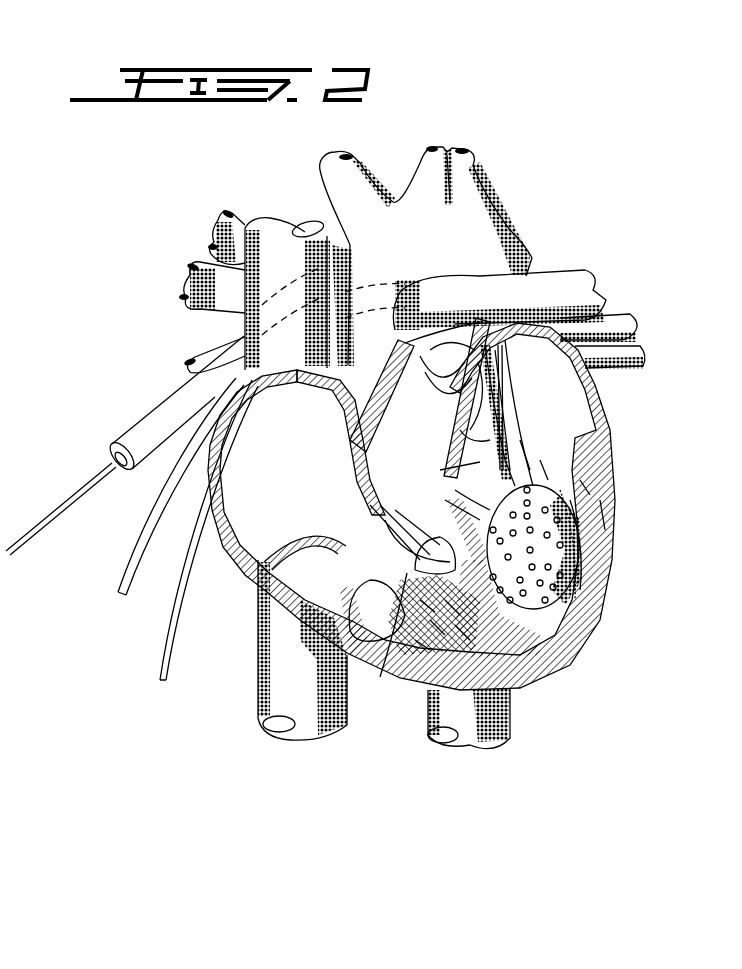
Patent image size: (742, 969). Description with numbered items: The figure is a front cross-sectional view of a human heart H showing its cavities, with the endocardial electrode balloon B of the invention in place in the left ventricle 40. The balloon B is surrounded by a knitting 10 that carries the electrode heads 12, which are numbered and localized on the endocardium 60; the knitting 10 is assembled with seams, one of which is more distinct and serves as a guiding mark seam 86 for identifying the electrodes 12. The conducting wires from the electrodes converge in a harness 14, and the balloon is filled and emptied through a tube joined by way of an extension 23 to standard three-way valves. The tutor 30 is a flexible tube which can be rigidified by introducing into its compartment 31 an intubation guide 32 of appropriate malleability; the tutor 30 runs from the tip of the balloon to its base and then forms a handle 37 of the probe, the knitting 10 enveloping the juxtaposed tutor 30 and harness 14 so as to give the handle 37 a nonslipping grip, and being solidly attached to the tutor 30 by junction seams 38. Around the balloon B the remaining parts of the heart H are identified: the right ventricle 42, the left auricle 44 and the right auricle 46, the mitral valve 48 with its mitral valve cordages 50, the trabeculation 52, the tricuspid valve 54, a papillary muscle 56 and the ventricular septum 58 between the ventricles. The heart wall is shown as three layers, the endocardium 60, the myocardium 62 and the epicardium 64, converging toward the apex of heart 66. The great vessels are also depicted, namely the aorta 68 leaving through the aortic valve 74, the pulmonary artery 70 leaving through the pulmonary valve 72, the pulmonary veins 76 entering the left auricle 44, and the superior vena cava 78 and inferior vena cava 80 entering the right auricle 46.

The knitting 10 is at (545, 540).
The electrode heads 12 is at (604, 583).
The harness 14 is at (160, 627).
The extension 23 is at (123, 560).
The tutor 30 is at (127, 430).
The compartment 31 is at (112, 470).
The intubation guide 32 is at (53, 505).
The handle 37 is at (483, 388).
The junction seams 38 is at (547, 437).
The left ventricle 40 is at (556, 468).
The right ventricle 42 is at (310, 576).
The left auricle 44 is at (559, 402).
The right auricle 46 is at (258, 517).
The mitral valve 48 is at (548, 447).
The mitral valve cordages 50 is at (470, 506).
The trabeculation 52 is at (415, 675).
The tricuspid valve 54 is at (340, 540).
The papillary muscle 56 is at (393, 677).
The ventricular septum 58 is at (456, 478).
The endocardium 60 is at (592, 490).
The myocardium 62 is at (598, 516).
The epicardium 64 is at (613, 563).
The apex of heart 66 is at (567, 667).
The aorta 68 is at (458, 225).
The pulmonary artery 70 is at (487, 300).
The pulmonary valve 72 is at (406, 352).
The aortic valve 74 is at (470, 412).
The pulmonary veins 76 is at (612, 338).
The superior vena cava 78 is at (262, 234).
The inferior vena cava 80 is at (287, 680).
The guiding mark seam 86 is at (590, 620).
The heart H is at (519, 221).
The electrode balloon B is at (556, 662).